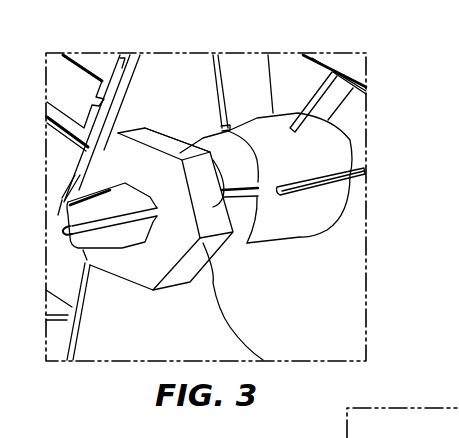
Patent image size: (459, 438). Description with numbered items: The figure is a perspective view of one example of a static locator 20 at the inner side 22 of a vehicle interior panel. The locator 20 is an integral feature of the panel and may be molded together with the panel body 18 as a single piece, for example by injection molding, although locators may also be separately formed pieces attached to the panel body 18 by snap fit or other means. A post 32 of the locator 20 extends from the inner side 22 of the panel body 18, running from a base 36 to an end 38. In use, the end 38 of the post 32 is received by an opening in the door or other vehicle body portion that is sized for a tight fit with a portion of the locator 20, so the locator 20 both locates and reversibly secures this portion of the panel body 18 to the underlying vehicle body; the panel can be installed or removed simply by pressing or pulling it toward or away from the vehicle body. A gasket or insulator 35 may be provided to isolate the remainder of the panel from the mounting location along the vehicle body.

The panel body 18 is at (312, 347).
The static locator 20 is at (190, 140).
The inner side 22 is at (147, 68).
The post 32 is at (263, 133).
The gasket or insulator 35 is at (148, 273).
The base 36 is at (345, 137).
The end 38 is at (62, 228).